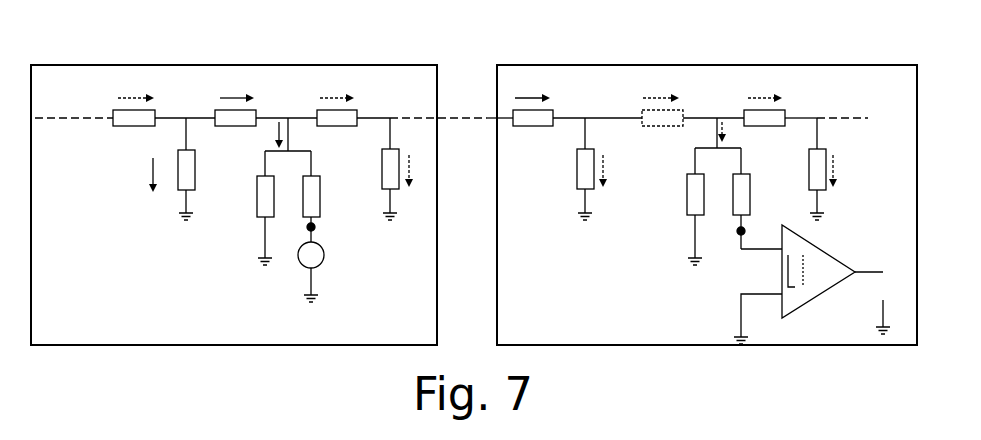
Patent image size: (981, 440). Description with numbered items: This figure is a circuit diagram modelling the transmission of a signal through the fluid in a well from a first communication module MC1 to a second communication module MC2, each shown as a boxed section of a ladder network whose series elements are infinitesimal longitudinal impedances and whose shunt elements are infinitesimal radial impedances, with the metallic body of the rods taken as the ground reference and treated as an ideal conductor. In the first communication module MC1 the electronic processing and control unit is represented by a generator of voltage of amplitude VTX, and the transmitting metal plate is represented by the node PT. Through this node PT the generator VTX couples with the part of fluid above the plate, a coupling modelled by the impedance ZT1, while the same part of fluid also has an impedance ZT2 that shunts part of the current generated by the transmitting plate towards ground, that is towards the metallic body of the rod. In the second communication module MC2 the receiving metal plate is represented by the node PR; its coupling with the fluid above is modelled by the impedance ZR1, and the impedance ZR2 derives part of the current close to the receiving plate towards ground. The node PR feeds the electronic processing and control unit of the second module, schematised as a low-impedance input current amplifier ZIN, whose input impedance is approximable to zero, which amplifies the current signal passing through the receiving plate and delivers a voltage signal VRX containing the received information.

The first communication module MC1 is at (238, 63).
The second communication module MC2 is at (735, 63).
The coupling impedance ZT1 is at (323, 209).
The shunt impedance of the fluid ZT2 is at (251, 220).
The node representing the transmitting metal plate PT is at (321, 233).
The generator of voltage VTX is at (322, 272).
The coupling impedance ZR1 is at (752, 211).
The shunt impedance of the fluid ZR2 is at (685, 219).
The node representing the receiving metal plate PR is at (759, 236).
The low-impedance input current amplifier ZIN is at (794, 284).
The received voltage signal VRX is at (881, 303).